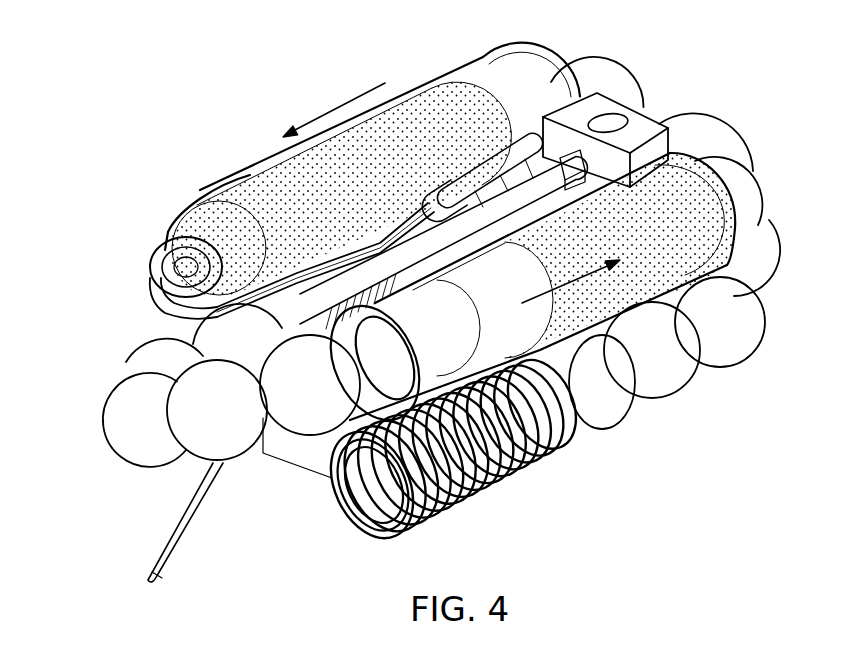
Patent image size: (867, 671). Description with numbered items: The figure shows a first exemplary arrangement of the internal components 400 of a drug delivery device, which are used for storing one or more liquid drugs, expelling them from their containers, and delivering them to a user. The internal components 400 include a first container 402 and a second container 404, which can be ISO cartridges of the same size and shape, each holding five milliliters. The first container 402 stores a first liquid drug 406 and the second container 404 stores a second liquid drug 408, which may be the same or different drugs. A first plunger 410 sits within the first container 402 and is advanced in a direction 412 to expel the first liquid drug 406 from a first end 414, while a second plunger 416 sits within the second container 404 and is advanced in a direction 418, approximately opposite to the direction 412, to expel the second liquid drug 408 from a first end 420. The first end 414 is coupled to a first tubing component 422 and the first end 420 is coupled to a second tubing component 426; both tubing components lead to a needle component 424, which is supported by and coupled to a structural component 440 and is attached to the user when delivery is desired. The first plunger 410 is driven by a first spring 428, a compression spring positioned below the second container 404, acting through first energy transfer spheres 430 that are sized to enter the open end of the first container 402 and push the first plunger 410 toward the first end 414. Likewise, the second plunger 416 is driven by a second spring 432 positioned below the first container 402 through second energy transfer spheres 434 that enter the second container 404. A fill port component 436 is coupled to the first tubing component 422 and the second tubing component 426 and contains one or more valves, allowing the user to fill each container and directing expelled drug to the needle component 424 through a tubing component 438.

The internal components 400 is at (92, 198).
The first container 402 is at (211, 186).
The second container 404 is at (587, 347).
The first liquid drug 406 is at (272, 177).
The second liquid drug 408 is at (713, 224).
The first plunger 410 is at (450, 88).
The direction 412 is at (334, 111).
The first end 414 is at (145, 263).
The second plunger 416 is at (550, 445).
The direction 418 is at (577, 268).
The first end 420 is at (747, 183).
The first tubing component 422 is at (148, 300).
The needle component 424 is at (180, 537).
The second tubing component 426 is at (730, 150).
The first spring 428 is at (449, 498).
The first energy transfer spheres 430 is at (735, 340).
The second spring 432 is at (296, 280).
The second energy transfer spheres 434 is at (145, 450).
The fill port component 436 is at (608, 120).
The tubing component 438 is at (458, 180).
The structural component 440 is at (570, 180).